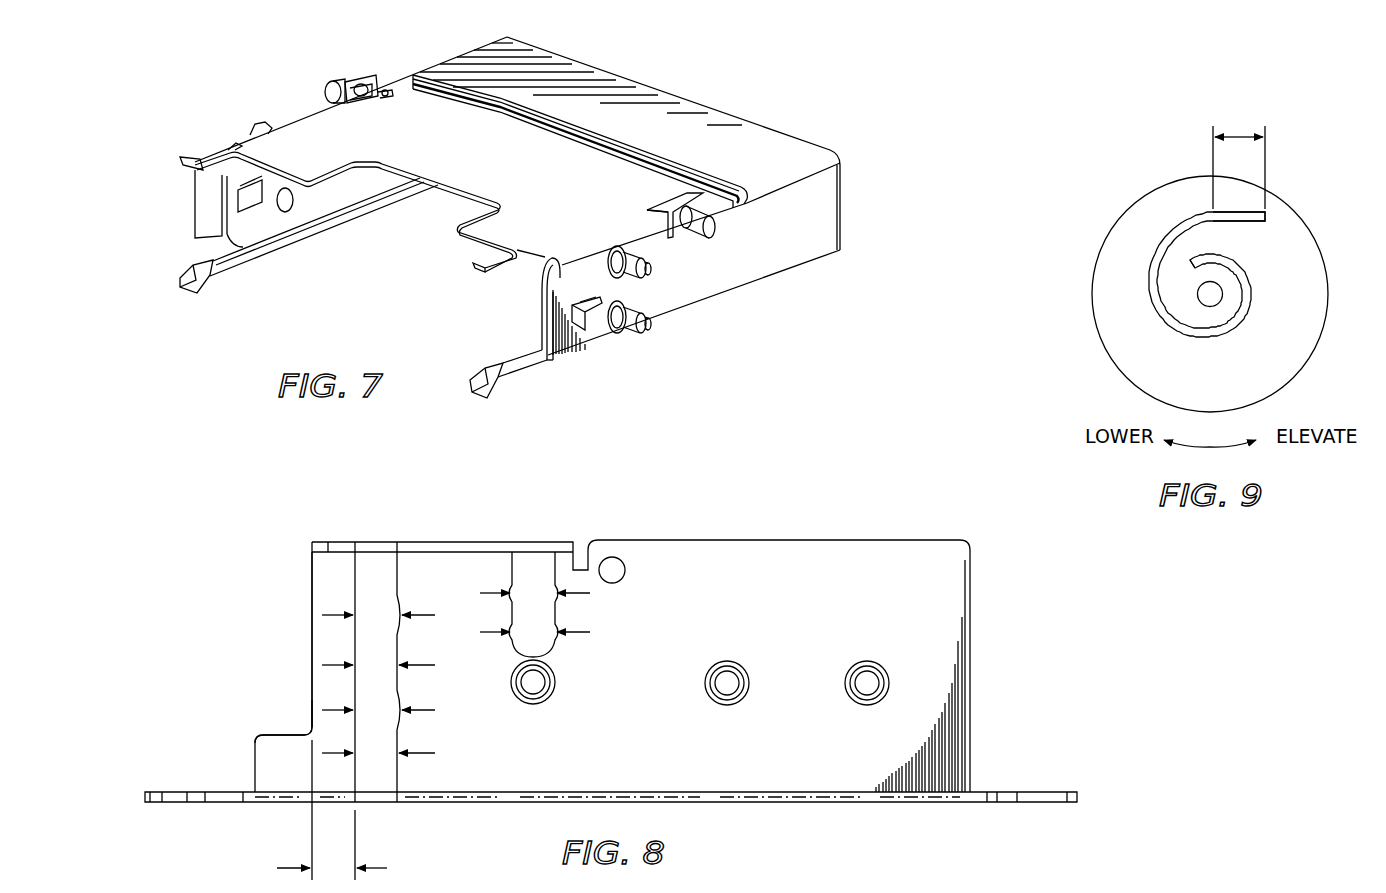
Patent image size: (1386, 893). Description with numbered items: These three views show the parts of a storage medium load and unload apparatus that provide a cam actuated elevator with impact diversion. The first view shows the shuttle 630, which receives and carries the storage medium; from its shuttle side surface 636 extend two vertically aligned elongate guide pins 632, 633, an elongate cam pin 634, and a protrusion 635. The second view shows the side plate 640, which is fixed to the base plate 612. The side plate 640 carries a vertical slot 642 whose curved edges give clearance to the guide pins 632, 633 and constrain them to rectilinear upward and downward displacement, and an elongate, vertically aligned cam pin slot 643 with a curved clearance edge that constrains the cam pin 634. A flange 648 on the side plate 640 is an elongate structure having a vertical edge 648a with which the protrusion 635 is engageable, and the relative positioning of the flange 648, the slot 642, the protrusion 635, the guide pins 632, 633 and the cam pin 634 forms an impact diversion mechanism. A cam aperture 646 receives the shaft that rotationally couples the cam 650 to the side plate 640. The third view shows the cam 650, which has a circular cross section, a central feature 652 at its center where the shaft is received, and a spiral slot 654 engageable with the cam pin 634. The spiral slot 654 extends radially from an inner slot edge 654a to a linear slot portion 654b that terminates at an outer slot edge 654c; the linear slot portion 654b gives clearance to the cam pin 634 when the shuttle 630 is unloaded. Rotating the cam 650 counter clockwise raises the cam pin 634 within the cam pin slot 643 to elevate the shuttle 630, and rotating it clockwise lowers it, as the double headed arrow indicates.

In FIG. 7, the shuttle 630 is at (310, 125).
In FIG. 7, the guide pin 632 is at (645, 325).
In FIG. 7, the guide pin 633 is at (645, 268).
In FIG. 7, the cam pin 634 is at (708, 223).
In FIG. 7, the protrusion 635 is at (590, 297).
In FIG. 7, the shuttle side surface 636 is at (828, 210).
In FIG. 8, the base plate 612 is at (1033, 792).
In FIG. 8, the side plate 640 is at (778, 540).
In FIG. 8, the vertical slot 642 is at (378, 783).
In FIG. 8, the cam pin slot 643 is at (531, 567).
In FIG. 8, the cam aperture 646 is at (556, 685).
In FIG. 8, the flange 648 is at (322, 580).
In FIG. 8, the vertical edge 648a is at (310, 680).
In FIG. 9, the cam 650 is at (1316, 156).
In FIG. 9, the pivot hole 652 is at (1216, 292).
In FIG. 9, the spiral slot 654 is at (1159, 234).
In FIG. 9, the inner slot edge 654a is at (1191, 266).
In FIG. 9, the linear slot portion 654b is at (1236, 137).
In FIG. 9, the outer slot edge 654c is at (1267, 216).